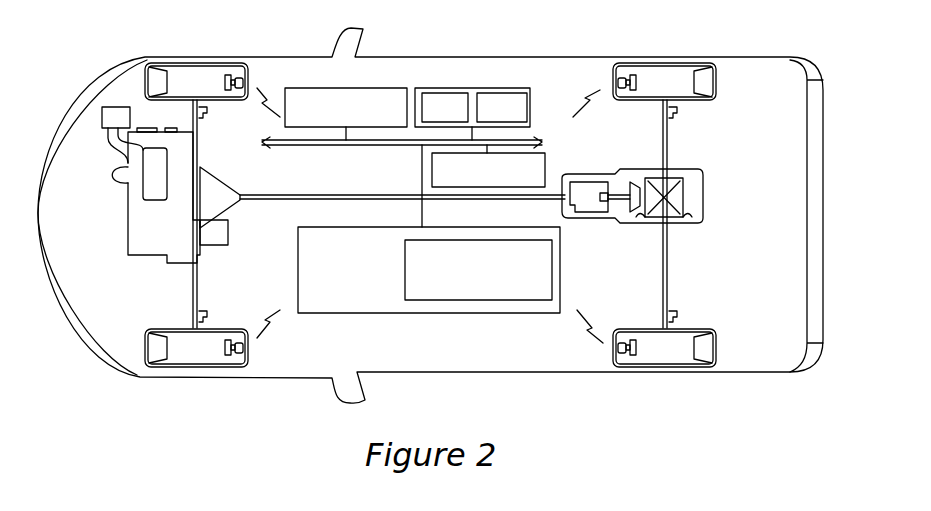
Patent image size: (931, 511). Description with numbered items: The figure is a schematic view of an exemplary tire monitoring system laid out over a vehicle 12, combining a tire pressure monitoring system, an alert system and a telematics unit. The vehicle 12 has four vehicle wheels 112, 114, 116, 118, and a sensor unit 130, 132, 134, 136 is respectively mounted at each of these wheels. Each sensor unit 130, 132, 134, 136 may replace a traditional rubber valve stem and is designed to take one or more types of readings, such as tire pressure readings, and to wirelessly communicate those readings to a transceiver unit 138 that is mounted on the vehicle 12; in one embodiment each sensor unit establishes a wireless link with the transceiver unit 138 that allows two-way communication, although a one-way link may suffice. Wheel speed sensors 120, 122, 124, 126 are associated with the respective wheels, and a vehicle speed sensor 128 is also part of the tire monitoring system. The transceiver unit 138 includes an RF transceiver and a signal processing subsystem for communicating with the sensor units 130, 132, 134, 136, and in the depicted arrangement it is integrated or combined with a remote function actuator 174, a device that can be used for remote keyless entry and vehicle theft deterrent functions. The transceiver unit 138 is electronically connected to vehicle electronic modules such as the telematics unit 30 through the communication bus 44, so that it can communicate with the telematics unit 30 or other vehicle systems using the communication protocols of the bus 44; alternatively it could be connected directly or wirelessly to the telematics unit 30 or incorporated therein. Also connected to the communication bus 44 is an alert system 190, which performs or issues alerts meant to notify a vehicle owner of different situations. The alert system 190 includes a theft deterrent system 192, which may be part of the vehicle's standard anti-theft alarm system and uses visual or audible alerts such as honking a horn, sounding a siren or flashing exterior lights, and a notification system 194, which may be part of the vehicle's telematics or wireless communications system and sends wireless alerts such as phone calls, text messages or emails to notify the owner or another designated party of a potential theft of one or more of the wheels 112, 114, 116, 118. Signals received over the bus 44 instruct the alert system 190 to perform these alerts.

The vehicle 12 is at (100, 327).
The telematics unit 30 is at (395, 88).
The communication bus 44 is at (290, 146).
The vehicle wheel 112 is at (202, 373).
The vehicle wheel 114 is at (205, 57).
The vehicle wheel 116 is at (628, 374).
The vehicle wheel 118 is at (644, 57).
The wheel speed sensor 120 is at (205, 320).
The wheel speed sensor 122 is at (203, 118).
The wheel speed sensor 124 is at (675, 320).
The wheel speed sensor 126 is at (673, 118).
The vehicle speed sensor 128 is at (545, 158).
The sensor unit 130 is at (245, 356).
The sensor unit 132 is at (243, 78).
The sensor unit 134 is at (615, 346).
The sensor unit 136 is at (604, 52).
The transceiver unit 138 is at (478, 270).
The remote function actuator 174 is at (429, 229).
The alert system 190 is at (472, 102).
The theft deterrent system 192 is at (445, 107).
The notification system 194 is at (491, 77).